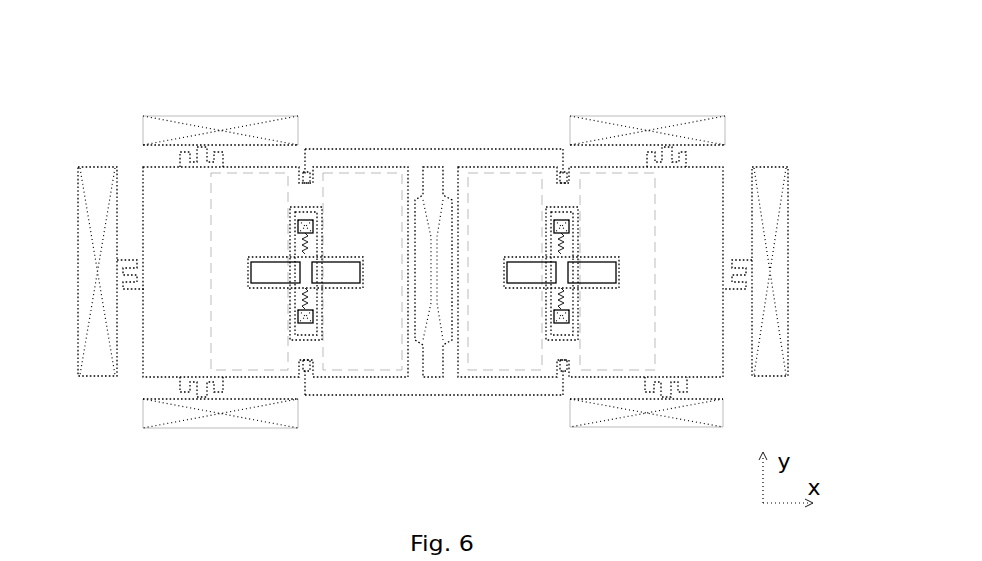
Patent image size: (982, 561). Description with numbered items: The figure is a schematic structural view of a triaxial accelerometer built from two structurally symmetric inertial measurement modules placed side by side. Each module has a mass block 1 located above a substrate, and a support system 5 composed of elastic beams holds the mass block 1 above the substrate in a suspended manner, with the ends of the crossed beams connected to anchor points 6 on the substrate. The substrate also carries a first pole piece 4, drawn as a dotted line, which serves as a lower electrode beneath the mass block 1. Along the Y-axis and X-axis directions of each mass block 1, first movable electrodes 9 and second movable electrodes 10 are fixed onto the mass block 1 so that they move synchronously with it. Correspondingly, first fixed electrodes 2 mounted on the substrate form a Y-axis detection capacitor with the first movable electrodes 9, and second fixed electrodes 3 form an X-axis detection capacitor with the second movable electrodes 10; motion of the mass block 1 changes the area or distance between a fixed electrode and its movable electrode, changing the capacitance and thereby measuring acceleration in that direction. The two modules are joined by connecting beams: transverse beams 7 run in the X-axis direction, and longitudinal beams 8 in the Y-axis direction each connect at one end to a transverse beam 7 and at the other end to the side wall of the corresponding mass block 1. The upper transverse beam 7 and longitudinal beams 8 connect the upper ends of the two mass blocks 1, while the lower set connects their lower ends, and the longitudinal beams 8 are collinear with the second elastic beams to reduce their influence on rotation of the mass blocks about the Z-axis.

The mass block 1 is at (170, 330).
The first fixed electrode 2 is at (216, 113).
The second fixed electrode 3 is at (80, 216).
The first pole piece 4 is at (252, 188).
The support system 5 is at (305, 289).
The anchor point 6 is at (313, 323).
The transverse beam 7 is at (448, 148).
The longitudinal beam 8 is at (307, 172).
The first movable electrode 9 is at (186, 160).
The second movable electrode 10 is at (134, 259).